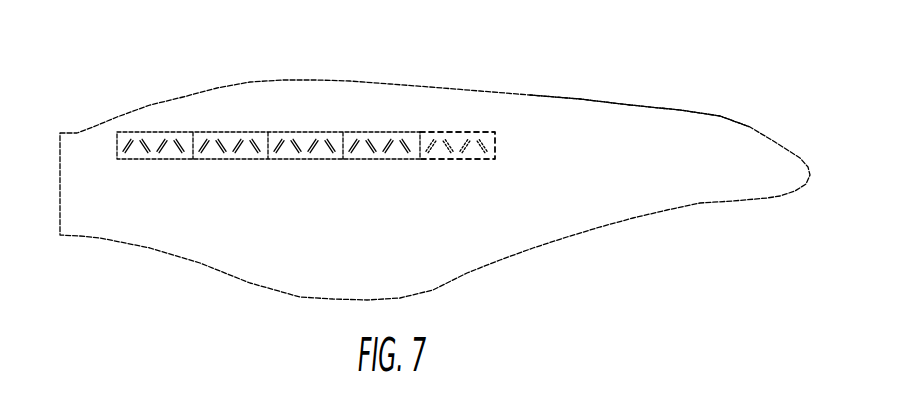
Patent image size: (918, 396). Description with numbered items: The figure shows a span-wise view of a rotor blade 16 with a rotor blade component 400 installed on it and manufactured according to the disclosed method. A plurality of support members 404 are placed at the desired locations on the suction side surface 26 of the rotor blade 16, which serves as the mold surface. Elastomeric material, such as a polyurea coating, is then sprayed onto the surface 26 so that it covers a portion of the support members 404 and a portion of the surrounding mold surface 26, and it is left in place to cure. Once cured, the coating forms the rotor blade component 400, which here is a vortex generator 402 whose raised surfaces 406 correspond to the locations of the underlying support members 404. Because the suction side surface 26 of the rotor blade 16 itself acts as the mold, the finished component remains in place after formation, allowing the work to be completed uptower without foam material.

The rotor blade 16 is at (764, 97).
The suction side surface 26 is at (628, 137).
The rotor blade component 400 is at (452, 120).
The vortex generator 402 is at (426, 132).
The support members 404 is at (483, 133).
The raised surfaces 406 is at (232, 132).